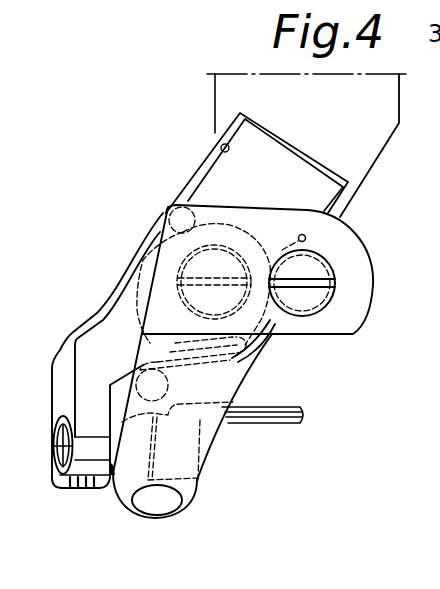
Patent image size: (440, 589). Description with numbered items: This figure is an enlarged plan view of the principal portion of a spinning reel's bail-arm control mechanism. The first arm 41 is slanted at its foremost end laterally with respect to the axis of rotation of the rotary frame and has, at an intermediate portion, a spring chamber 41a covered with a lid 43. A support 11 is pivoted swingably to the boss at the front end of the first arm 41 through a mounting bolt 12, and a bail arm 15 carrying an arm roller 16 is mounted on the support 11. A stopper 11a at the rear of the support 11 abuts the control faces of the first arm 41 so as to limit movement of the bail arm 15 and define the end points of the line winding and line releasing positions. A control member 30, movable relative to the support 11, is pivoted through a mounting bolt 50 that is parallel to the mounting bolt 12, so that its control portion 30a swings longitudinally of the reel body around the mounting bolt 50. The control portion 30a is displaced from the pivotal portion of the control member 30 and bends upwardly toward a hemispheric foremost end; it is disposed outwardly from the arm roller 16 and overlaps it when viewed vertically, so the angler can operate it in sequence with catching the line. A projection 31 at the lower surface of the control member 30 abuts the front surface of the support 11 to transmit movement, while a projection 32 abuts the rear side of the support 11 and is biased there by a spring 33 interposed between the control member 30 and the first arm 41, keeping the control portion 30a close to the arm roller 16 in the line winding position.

The support 11 is at (103, 318).
The stopper 11a is at (242, 354).
The mounting bolt 12 is at (193, 268).
The bail arm 15 is at (273, 423).
The arm roller 16 is at (187, 463).
The control member 30 is at (347, 248).
The control portion 30a is at (158, 503).
The projection 31 is at (160, 390).
The projection 32 is at (170, 210).
The spring 33 is at (310, 240).
The first arm 41 is at (362, 150).
The spring chamber 41a is at (226, 144).
The lid 43 is at (273, 163).
The mounting bolt 50 is at (313, 270).